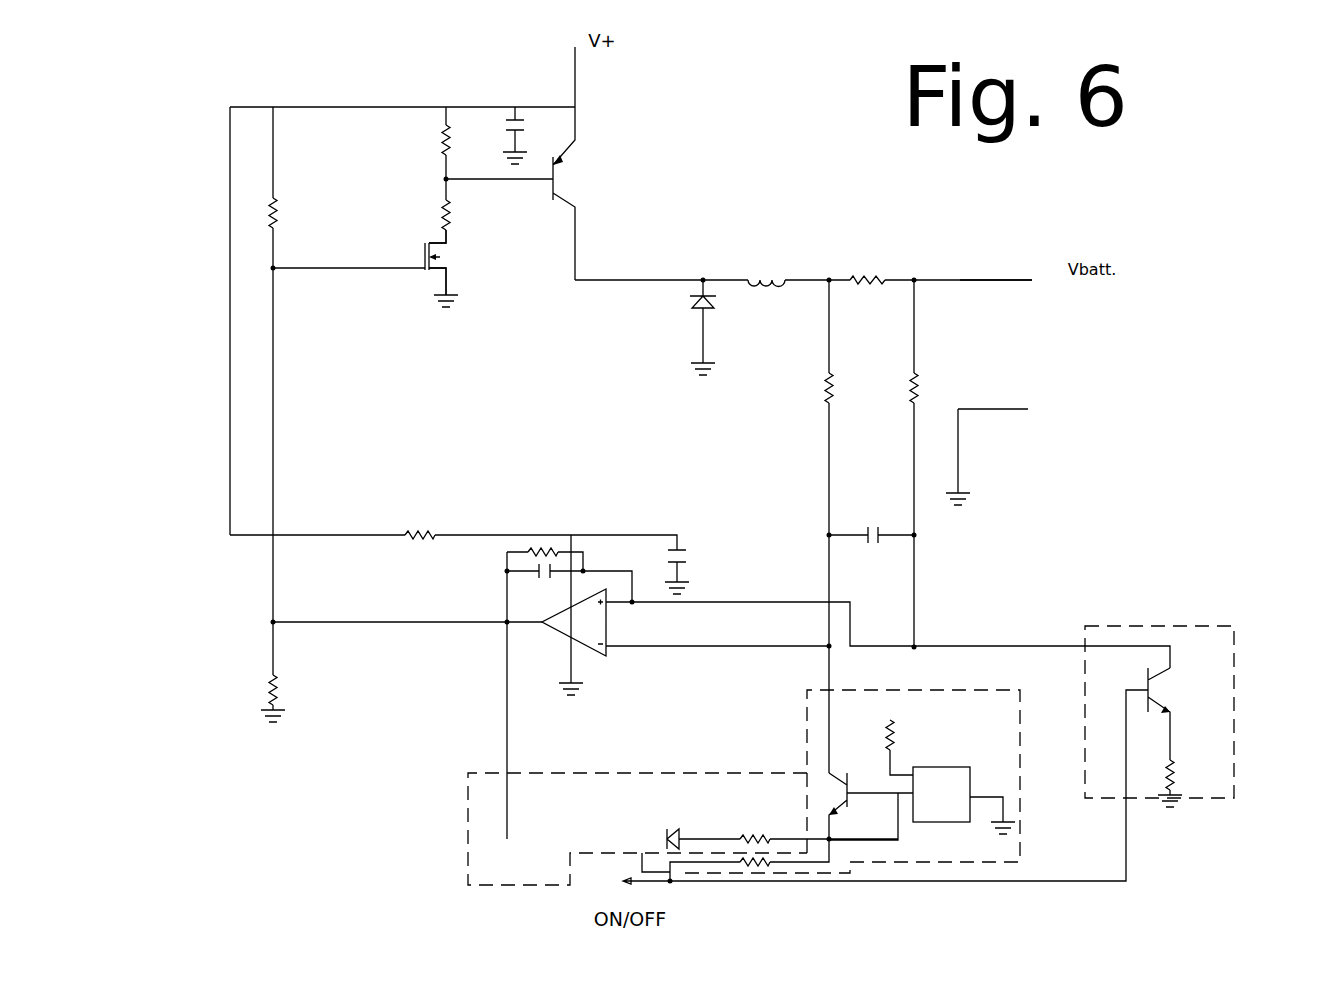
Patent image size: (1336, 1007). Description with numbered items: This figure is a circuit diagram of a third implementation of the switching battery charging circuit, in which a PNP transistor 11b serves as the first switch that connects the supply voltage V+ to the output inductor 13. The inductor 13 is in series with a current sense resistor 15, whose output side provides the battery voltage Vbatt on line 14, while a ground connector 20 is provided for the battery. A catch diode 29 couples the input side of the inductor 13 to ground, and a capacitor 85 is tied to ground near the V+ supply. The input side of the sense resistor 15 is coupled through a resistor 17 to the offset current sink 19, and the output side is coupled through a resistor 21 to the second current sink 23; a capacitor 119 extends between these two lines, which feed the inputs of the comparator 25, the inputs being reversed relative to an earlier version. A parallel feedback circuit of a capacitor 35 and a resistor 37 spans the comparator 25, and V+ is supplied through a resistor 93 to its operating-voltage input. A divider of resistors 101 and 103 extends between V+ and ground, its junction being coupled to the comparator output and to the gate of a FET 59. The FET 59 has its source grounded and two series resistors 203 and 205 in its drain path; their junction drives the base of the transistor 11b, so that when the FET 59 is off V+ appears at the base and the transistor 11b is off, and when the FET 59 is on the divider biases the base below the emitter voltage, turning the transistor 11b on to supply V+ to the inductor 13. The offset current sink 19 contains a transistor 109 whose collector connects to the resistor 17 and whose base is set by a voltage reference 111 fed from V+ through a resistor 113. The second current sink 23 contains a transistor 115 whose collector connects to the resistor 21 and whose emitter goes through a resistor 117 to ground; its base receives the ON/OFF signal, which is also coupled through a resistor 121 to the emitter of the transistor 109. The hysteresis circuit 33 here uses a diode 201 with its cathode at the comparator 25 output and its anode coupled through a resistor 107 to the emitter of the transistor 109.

The PNP transistor 11b is at (575, 181).
The output inductor 13 is at (754, 275).
The line 14 is at (990, 276).
The current sense resistor 15 is at (864, 272).
The resistor 17 is at (826, 402).
The offset current sink 19 is at (922, 688).
The ground connector 20 is at (988, 408).
The resistor 21 is at (921, 395).
The second current sink 23 is at (1232, 742).
The comparator 25 is at (560, 633).
The catch diode 29 is at (696, 306).
The hysteresis circuit 33 is at (574, 773).
The capacitor 35 is at (550, 580).
The resistor 37 is at (559, 553).
The FET 59 is at (421, 252).
The capacitor 85 is at (526, 124).
The resistor 93 is at (417, 540).
The resistor 101 is at (271, 228).
The resistor 103 is at (268, 677).
The resistor 107 is at (744, 838).
The transistor 109 is at (843, 810).
The voltage reference 111 is at (937, 772).
The resistor 113 is at (888, 752).
The transistor 115 is at (1150, 697).
The resistor 117 is at (1171, 790).
The capacitor 119 is at (872, 528).
The resistor 121 is at (754, 866).
The diode 201 is at (661, 835).
The resistor 203 is at (442, 222).
The resistor 205 is at (440, 133).